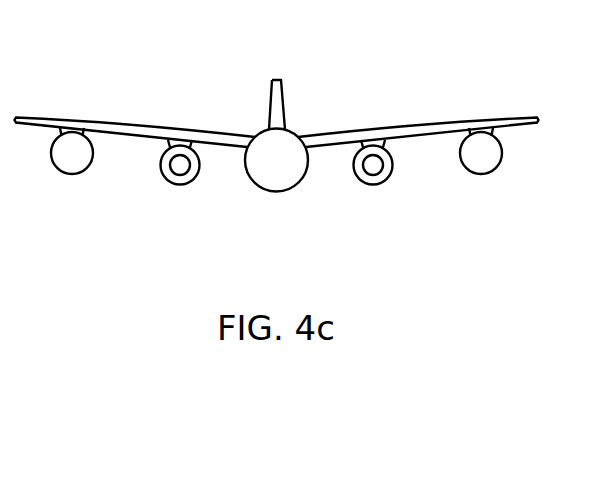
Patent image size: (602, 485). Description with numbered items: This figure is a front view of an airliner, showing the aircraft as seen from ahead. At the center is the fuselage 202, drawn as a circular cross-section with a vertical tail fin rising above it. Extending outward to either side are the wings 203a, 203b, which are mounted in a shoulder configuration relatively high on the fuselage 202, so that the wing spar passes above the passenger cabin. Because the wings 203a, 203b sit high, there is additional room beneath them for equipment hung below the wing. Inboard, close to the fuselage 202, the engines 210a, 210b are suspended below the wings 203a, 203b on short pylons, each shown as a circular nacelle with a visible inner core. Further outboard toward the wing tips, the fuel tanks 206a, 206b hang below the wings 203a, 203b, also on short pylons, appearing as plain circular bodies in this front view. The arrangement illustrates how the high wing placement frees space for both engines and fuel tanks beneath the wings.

The fuselage 202 is at (271, 191).
The wing 203a is at (399, 126).
The wing 203b is at (138, 123).
The fuel tank 206a is at (481, 175).
The fuel tank 206b is at (71, 176).
The engine 210a is at (373, 186).
The engine 210b is at (177, 185).